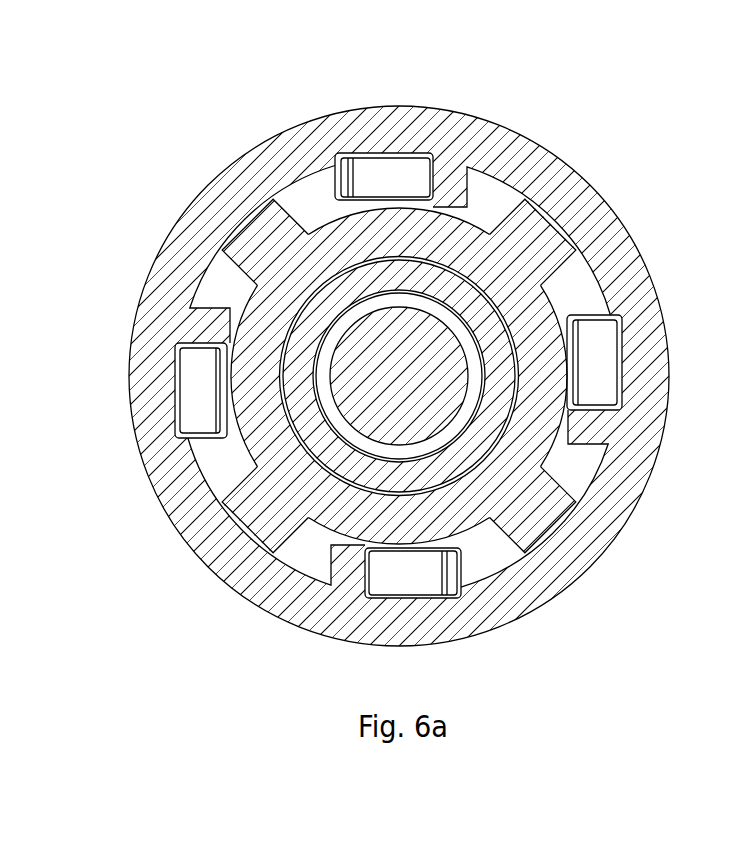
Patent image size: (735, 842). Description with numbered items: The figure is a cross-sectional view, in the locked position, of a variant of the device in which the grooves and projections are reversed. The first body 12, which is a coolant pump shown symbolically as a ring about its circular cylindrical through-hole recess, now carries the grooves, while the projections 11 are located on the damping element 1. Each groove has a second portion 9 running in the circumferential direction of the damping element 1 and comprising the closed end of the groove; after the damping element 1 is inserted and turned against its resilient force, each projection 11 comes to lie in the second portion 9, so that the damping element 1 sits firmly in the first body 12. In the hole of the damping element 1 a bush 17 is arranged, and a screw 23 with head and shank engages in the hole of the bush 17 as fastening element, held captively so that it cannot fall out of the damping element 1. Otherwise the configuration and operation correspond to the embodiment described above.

The damping element 1 is at (253, 460).
The second portion of the groove 9 is at (400, 178).
The projection 11 is at (267, 250).
The first body 12 is at (552, 588).
The bush 17 is at (457, 463).
The screw 23 is at (370, 382).